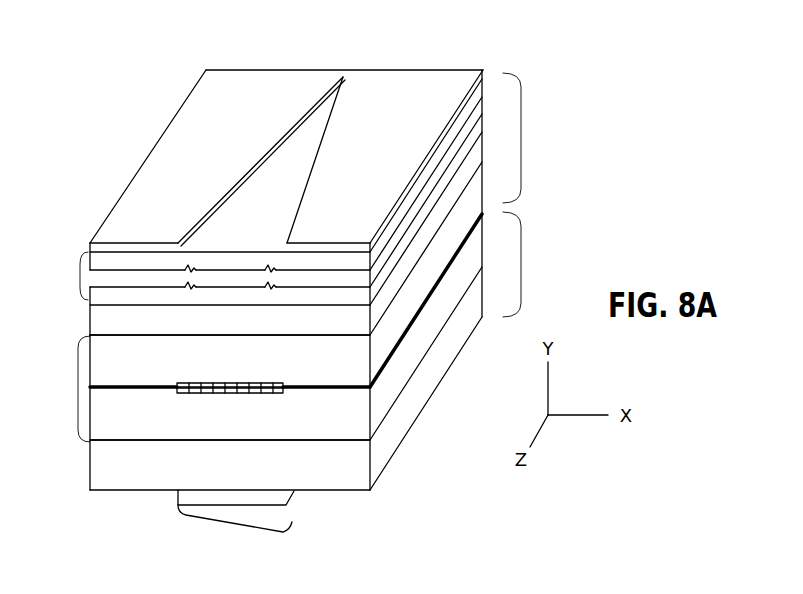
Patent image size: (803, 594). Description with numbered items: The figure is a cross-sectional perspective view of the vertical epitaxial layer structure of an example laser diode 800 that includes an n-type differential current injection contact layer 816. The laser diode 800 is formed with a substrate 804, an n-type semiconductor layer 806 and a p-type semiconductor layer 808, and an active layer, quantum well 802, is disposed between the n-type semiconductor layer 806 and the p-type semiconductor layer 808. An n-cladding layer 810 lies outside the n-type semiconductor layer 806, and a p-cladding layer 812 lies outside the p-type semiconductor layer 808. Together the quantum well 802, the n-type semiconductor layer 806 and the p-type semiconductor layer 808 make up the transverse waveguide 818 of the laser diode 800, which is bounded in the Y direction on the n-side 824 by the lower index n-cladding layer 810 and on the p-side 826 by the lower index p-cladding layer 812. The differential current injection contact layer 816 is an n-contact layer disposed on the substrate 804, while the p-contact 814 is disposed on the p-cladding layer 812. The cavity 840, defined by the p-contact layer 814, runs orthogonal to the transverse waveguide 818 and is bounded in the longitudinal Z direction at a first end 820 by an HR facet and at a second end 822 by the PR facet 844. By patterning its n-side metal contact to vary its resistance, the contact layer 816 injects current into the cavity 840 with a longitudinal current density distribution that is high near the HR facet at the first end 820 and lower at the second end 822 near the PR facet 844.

The laser diode 800 is at (88, 123).
The quantum well 802 is at (305, 386).
The substrate 804 is at (77, 278).
The n-type semiconductor layer 806 is at (102, 374).
The p-type semiconductor layer 808 is at (102, 424).
The n-cladding layer 810 is at (106, 332).
The p-cladding layer 812 is at (102, 481).
The p-contact 814 is at (175, 505).
The n-type differential current injection contact layer 816 is at (218, 115).
The transverse waveguide 818 is at (76, 392).
The first end 820 is at (196, 70).
The second end 822 is at (77, 232).
The n-side 824 is at (521, 139).
The p-side 826 is at (521, 265).
The cavity 840 is at (237, 523).
The PR facet 844 is at (238, 384).